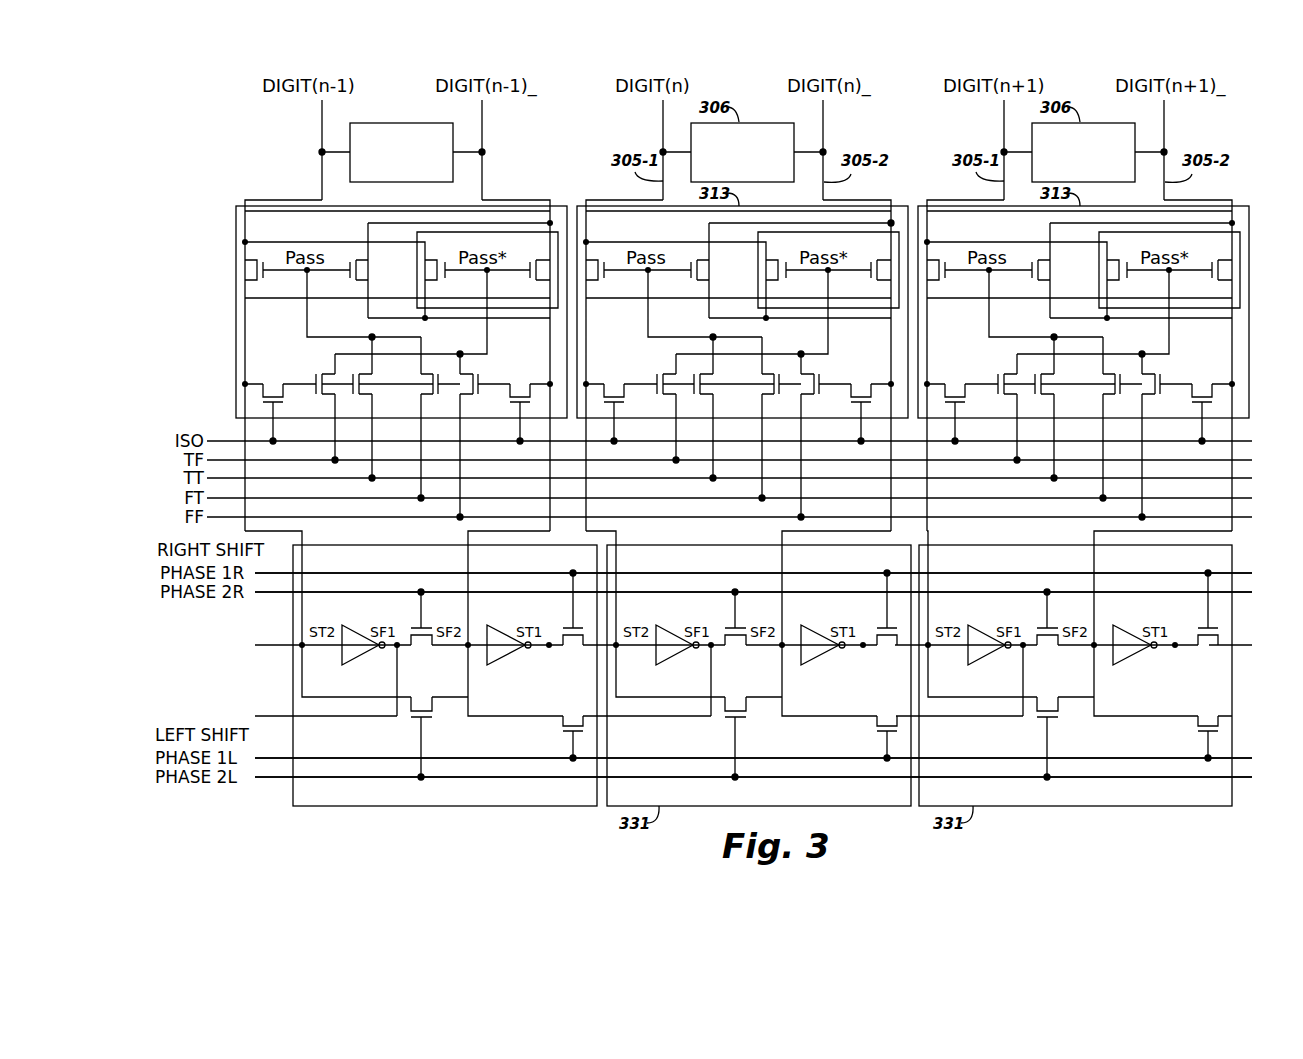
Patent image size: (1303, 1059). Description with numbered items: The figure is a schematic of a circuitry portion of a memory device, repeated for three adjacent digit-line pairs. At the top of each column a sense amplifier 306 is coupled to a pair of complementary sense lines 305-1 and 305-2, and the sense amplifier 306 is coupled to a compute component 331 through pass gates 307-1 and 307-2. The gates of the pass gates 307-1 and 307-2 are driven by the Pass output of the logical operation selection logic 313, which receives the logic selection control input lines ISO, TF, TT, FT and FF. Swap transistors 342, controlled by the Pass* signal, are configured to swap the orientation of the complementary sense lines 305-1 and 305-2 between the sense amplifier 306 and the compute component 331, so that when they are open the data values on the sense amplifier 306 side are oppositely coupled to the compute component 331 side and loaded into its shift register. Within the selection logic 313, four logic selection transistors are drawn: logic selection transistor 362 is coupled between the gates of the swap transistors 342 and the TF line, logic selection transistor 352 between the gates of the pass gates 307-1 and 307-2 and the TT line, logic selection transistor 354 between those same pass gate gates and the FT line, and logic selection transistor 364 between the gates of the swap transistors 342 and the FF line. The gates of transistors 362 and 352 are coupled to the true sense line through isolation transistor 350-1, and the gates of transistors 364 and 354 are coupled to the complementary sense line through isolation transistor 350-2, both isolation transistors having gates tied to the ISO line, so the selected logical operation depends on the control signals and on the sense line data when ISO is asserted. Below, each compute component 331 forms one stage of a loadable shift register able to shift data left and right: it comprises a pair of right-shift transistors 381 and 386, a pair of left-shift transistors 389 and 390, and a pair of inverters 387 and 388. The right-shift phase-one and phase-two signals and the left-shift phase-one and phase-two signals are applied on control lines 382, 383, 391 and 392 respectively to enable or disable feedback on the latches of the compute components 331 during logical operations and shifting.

The complementary sense line 305-1 is at (322, 181).
The complementary sense line 305-2 is at (483, 182).
The sense amplifier 306 is at (398, 122).
The logical operation selection logic 313 is at (398, 206).
The pass gate 307-1 is at (252, 270).
The pass gate 307-2 is at (362, 264).
The swap transistors 342 is at (550, 223).
The logic selection transistor 362 is at (329, 375).
The logic selection transistor 364 is at (467, 375).
The logic selection transistor 352 is at (370, 386).
The logic selection transistor 354 is at (423, 383).
The isolation transistor 350-1 is at (273, 382).
The isolation transistor 350-2 is at (521, 382).
The compute component 331 is at (345, 806).
The control line 382 is at (372, 573).
The control line 383 is at (372, 592).
The control line 391 is at (372, 758).
The control line 392 is at (372, 777).
The inverter 387 is at (667, 633).
The inverter 388 is at (813, 633).
The right-shift transistor 386 is at (735, 640).
The left-shift transistor 390 is at (733, 697).
The right-shift transistor 381 is at (884, 640).
The left-shift transistor 389 is at (884, 720).